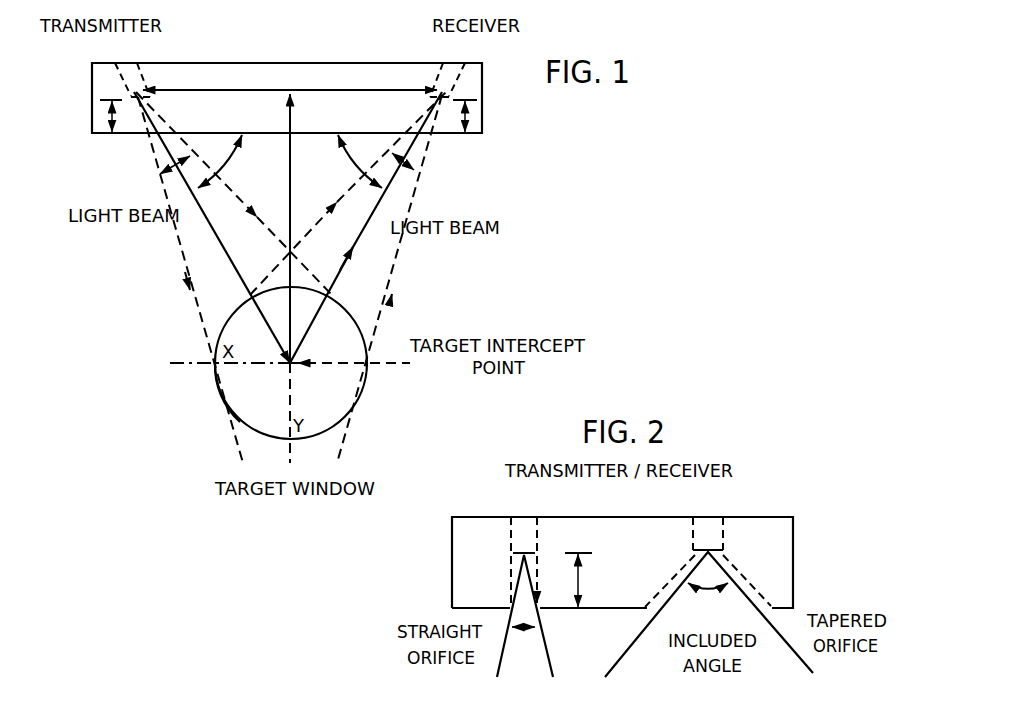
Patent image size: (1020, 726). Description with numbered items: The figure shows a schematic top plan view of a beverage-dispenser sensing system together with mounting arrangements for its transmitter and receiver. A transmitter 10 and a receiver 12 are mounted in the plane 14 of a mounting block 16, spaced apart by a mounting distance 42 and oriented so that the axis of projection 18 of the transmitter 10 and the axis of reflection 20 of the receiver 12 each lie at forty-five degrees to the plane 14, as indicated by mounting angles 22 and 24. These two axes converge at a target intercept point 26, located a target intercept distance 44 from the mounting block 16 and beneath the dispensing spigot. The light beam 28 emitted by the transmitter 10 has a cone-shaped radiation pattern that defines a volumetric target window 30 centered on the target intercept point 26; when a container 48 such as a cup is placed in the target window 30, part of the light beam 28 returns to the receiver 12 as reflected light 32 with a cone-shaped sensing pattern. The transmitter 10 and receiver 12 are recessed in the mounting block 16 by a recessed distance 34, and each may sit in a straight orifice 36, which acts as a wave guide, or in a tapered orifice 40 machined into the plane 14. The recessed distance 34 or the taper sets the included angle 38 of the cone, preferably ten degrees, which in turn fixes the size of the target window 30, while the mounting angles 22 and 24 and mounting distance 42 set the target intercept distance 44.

In FIG. 1, the transmitter 10 is at (125, 64).
In FIG. 2, the transmitter 10 is at (527, 531).
In FIG. 1, the receiver 12 is at (457, 63).
In FIG. 2, the receiver 12 is at (710, 519).
In FIG. 1, the plane 14 is at (476, 134).
In FIG. 2, the plane 14 is at (566, 611).
In FIG. 1, the mounting block 16 is at (358, 124).
In FIG. 2, the mounting block 16 is at (644, 552).
In FIG. 1, the axis of projection 18 is at (212, 238).
In FIG. 1, the axis of reflection 20 is at (363, 237).
In FIG. 1, the mounting angle 22 is at (235, 162).
In FIG. 1, the mounting angle 24 is at (346, 162).
In FIG. 1, the target intercept point 26 is at (300, 364).
In FIG. 1, the light beam 28 is at (225, 288).
In FIG. 2, the light beam 28 is at (525, 705).
In FIG. 1, the target window 30 is at (269, 406).
In FIG. 1, the reflected light 32 is at (335, 260).
In FIG. 2, the reflected light 32 is at (551, 705).
In FIG. 1, the recessed distance 34 is at (108, 118).
In FIG. 2, the recessed distance 34 is at (585, 582).
In FIG. 2, the straight orifice 36 is at (510, 573).
In FIG. 1, the included angle 38 is at (162, 163).
In FIG. 2, the included angle 38 is at (529, 630).
In FIG. 2, the tapered orifice 40 is at (732, 559).
In FIG. 1, the mounting distance 42 is at (241, 89).
In FIG. 1, the target intercept distance 44 is at (288, 203).
In FIG. 1, the container 48 is at (240, 422).